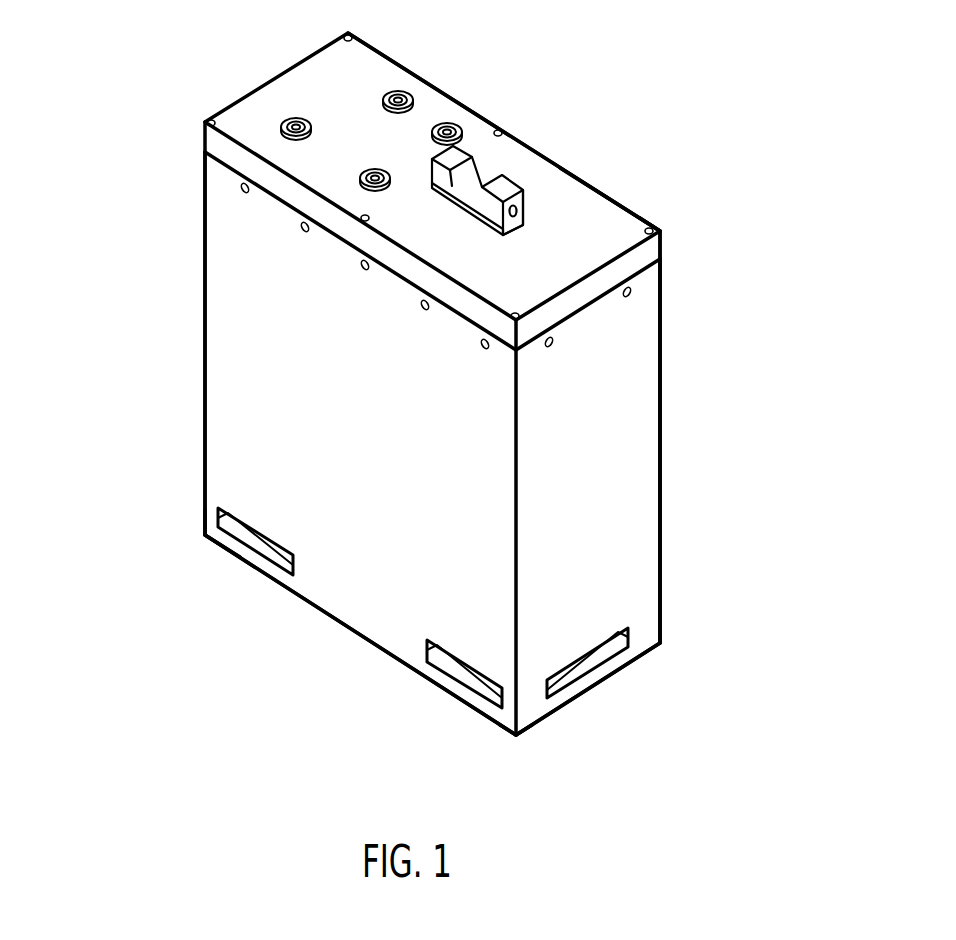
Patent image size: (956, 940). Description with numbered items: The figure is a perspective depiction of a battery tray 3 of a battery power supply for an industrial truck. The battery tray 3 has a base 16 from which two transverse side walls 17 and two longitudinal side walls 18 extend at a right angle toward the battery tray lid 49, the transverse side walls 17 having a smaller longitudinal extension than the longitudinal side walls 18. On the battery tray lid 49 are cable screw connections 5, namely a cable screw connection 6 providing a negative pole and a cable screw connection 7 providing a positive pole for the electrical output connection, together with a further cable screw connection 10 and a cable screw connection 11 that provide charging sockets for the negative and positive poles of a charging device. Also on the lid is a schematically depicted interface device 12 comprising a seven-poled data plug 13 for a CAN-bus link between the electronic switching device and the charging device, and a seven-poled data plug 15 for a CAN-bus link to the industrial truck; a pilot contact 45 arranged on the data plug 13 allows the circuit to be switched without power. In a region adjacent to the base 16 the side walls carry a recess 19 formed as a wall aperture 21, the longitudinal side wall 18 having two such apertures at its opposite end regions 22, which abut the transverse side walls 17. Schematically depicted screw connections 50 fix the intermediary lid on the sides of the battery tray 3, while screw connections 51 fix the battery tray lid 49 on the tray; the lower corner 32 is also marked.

The battery tray 3 is at (648, 505).
The cable screw connections 5 is at (466, 52).
The cable screw connection 6 is at (398, 91).
The cable screw connection 7 is at (298, 118).
The cable screw connection 10 is at (448, 123).
The cable screw connection 11 is at (360, 178).
The interface device 12 is at (532, 110).
The data plug 13 is at (508, 188).
The data plug 15 is at (437, 192).
The base 16 is at (584, 732).
The transverse side walls 17 is at (185, 481).
The longitudinal side walls 18 is at (392, 645).
The recess 19 is at (230, 537).
The wall aperture 21 is at (264, 556).
The end regions 22 is at (184, 543).
The bottom edge 32 is at (503, 750).
The pilot contact 45 is at (523, 202).
The battery tray lid 49 is at (598, 205).
The screw connections 50 is at (629, 295).
The screw connections 51 is at (660, 231).